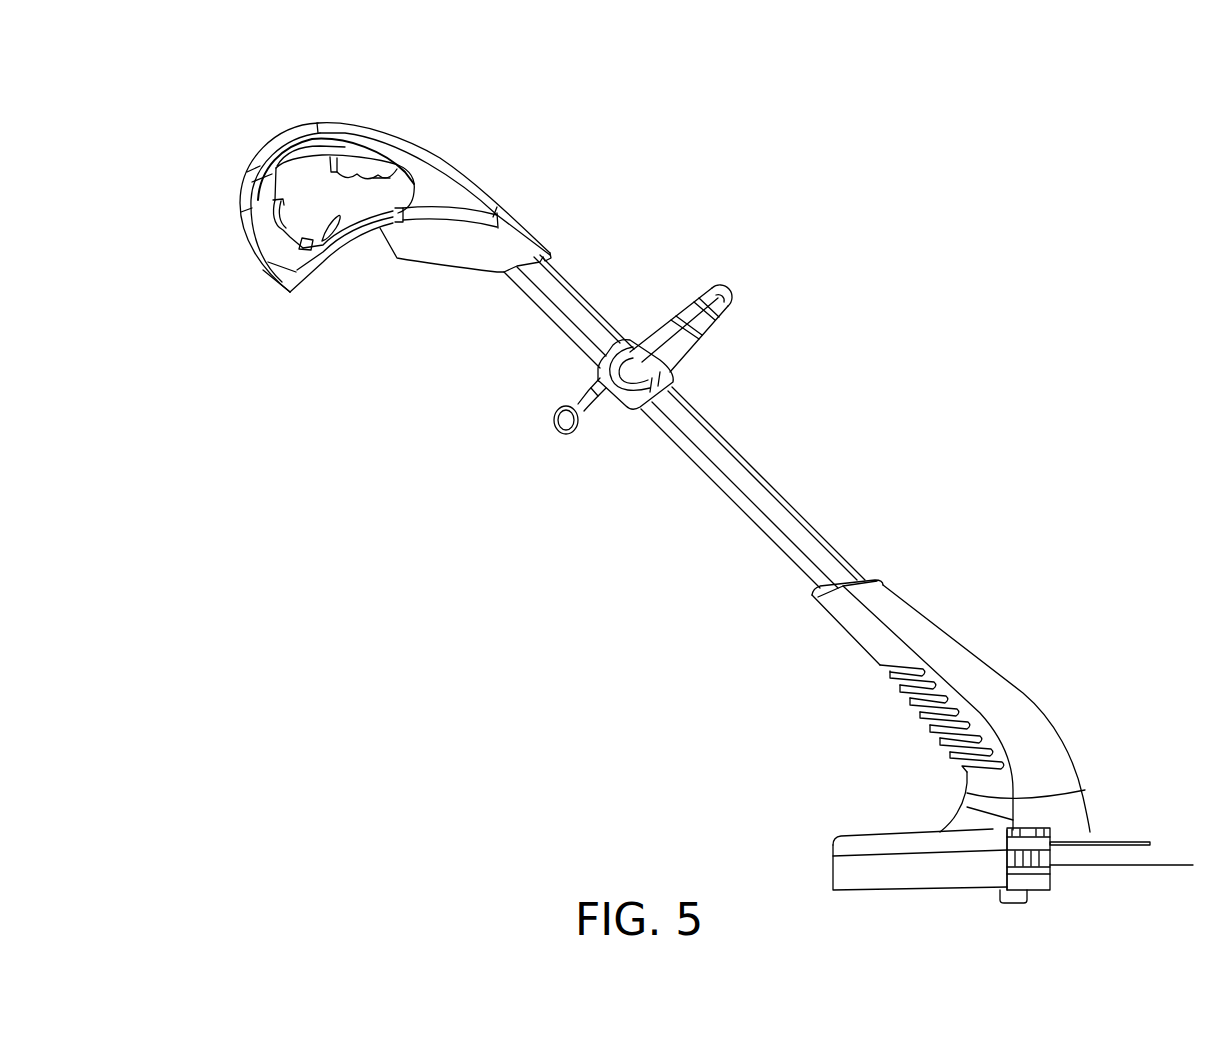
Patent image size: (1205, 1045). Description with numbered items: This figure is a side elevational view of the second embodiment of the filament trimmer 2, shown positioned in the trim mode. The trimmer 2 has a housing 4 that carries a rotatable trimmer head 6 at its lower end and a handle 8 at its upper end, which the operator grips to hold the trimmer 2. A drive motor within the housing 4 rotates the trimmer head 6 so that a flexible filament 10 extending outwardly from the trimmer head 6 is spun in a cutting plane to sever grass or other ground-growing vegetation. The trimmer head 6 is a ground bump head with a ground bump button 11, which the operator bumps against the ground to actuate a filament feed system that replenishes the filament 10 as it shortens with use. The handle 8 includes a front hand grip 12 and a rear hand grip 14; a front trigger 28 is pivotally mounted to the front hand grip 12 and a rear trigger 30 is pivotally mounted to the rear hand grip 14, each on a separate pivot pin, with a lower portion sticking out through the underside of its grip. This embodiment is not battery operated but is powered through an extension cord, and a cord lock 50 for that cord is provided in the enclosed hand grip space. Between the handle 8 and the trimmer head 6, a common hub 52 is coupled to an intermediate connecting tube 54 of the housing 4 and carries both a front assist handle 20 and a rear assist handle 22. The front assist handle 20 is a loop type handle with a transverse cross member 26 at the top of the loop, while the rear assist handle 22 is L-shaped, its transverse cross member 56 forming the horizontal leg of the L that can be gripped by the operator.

The filament trimmer 2 is at (808, 367).
The housing 4 is at (823, 537).
The trimmer head 6 is at (1043, 878).
The handle 8 is at (373, 121).
The flexible filament 10 is at (1142, 866).
The ground bump button 11 is at (1013, 903).
The front hand grip 12 is at (385, 137).
The rear hand grip 14 is at (242, 190).
The front assist handle 20 is at (700, 340).
The rear assist handle 22 is at (593, 400).
The transverse cross member 26 is at (746, 294).
The front trigger 28 is at (375, 185).
The rear trigger 30 is at (287, 215).
The cord lock 50 is at (330, 240).
The common hub 52 is at (618, 335).
The intermediate connecting tube 54 is at (723, 443).
The transverse cross member 56 is at (570, 437).